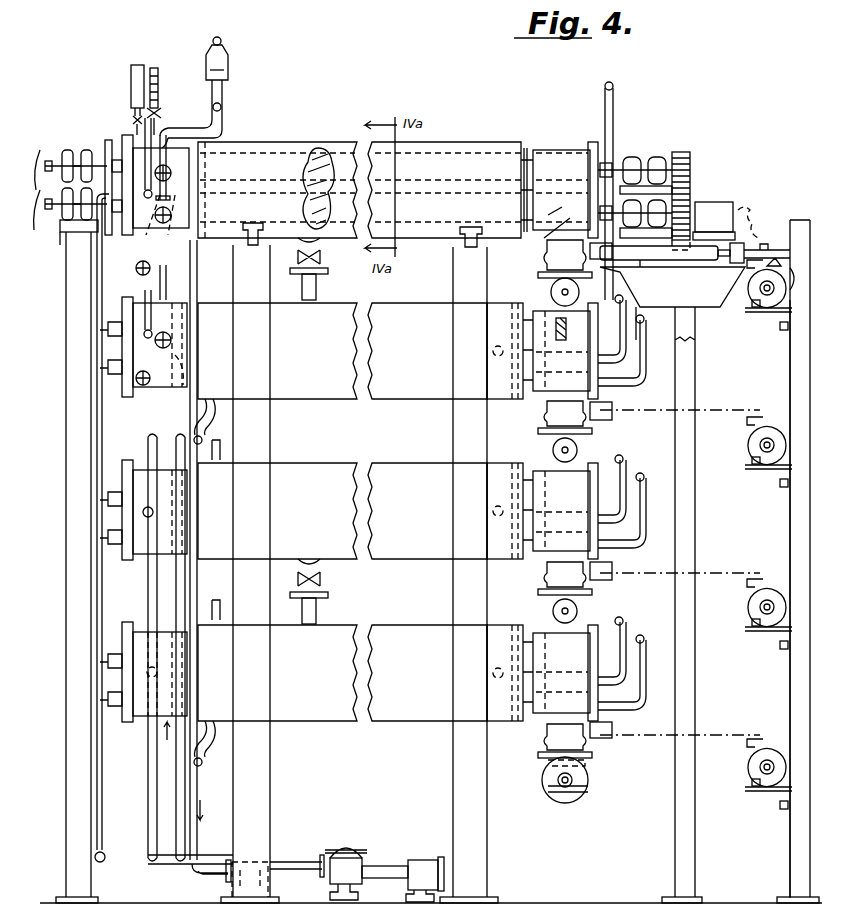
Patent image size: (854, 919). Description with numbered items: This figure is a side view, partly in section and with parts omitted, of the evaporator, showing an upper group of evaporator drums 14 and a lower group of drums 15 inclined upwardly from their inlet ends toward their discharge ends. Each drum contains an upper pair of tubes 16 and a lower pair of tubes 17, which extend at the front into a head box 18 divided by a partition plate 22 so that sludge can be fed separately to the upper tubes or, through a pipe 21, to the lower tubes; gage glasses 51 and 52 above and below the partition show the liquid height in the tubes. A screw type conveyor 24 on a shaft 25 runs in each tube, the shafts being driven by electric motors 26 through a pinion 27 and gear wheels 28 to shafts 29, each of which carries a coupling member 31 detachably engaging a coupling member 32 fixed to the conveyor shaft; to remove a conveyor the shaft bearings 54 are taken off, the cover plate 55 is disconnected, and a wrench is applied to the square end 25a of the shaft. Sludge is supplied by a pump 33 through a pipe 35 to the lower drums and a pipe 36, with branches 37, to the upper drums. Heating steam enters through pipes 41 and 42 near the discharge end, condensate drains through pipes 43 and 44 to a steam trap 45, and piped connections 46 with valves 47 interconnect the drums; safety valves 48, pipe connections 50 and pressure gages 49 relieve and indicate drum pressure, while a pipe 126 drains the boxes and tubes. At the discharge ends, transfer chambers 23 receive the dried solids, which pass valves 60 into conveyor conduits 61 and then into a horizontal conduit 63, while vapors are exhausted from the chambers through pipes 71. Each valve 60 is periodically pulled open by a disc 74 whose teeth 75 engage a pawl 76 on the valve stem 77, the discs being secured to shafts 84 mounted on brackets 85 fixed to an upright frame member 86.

The upper evaporator drums 14 is at (402, 304).
The lower evaporator drums 15 is at (420, 551).
The upper tubes 16 is at (523, 336).
The lower tubes 17 is at (512, 226).
The head box 18 is at (148, 510).
The pipe 21 is at (168, 324).
The partition plate 22 is at (148, 228).
The transfer chambers 23 is at (528, 472).
The screw type conveyor 24 is at (317, 152).
The conveyor shaft 25 is at (520, 334).
The square end 25a is at (46, 224).
The electric motors 26 is at (728, 206).
The pinion 27 is at (610, 730).
The gear wheels 28 is at (690, 169).
The shafts 29 is at (618, 162).
The coupling member 31 is at (596, 352).
The coupling member 32 is at (536, 226).
The pump 33 is at (356, 856).
The pipe 35 is at (152, 790).
The pipe 36 is at (178, 742).
The branches 37 is at (160, 80).
The heating medium pipe 41 is at (638, 631).
The heating medium pipe 42 is at (506, 390).
The condensate drain pipe 43 is at (206, 746).
The condensate drain pipe 44 is at (196, 798).
The steam trap 45 is at (228, 884).
The piped connections 46 is at (318, 608).
The valves 47 is at (320, 576).
The safety valves 48 is at (226, 50).
The pressure gages 49 is at (138, 64).
The pipe connections 50 is at (224, 106).
The gage glass 51 is at (159, 274).
The gage glass 52 is at (138, 338).
The shaft bearings 54 is at (70, 148).
The cover plate 55 is at (110, 148).
The valves 60 is at (540, 742).
The conveyor conduits 61 is at (548, 289).
The horizontal conduit 63 is at (547, 794).
The pipes 71 is at (606, 454).
The disc 74 is at (752, 752).
The teeth 75 is at (798, 296).
The pawl 76 is at (766, 412).
The valve stem 77 is at (707, 264).
The shafts 84 is at (764, 762).
The brackets 85 is at (778, 810).
The upright frame member 86 is at (790, 668).
The drain pipe 126 is at (102, 834).